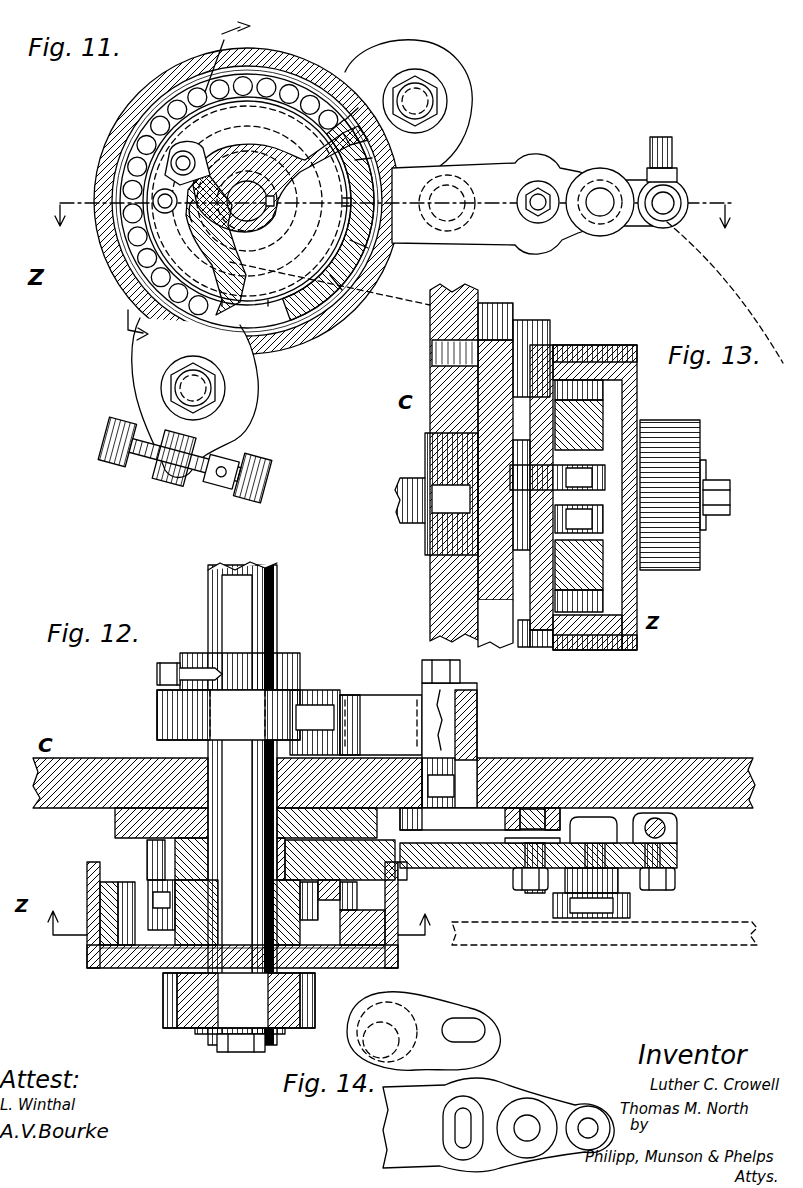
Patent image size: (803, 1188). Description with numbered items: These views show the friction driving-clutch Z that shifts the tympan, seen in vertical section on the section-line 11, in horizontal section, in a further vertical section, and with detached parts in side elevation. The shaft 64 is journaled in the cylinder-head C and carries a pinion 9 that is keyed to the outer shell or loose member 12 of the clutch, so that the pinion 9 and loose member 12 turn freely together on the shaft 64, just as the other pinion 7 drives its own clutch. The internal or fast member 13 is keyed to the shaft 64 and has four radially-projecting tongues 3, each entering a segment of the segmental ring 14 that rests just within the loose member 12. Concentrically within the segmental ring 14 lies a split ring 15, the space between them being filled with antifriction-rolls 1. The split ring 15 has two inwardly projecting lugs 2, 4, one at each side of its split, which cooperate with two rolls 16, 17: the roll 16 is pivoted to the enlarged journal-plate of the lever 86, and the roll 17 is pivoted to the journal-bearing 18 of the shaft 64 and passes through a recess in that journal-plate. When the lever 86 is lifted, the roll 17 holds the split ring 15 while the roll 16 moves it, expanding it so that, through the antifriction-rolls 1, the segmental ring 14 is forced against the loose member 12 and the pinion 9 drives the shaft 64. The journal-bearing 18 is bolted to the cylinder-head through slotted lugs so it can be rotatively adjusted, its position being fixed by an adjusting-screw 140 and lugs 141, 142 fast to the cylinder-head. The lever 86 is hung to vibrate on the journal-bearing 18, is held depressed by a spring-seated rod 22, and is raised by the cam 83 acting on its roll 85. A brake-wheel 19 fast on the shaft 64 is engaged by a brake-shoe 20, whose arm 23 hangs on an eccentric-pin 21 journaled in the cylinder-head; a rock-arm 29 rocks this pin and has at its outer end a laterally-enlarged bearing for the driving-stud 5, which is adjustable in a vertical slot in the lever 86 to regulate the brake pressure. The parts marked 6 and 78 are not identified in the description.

In FIG. 11, the antifriction-rolls 1 is at (272, 80).
In FIG. 13, the antifriction-rolls 1 is at (579, 496).
In FIG. 12, the antifriction-rolls 1 is at (239, 912).
In FIG. 11, the lug 2 is at (165, 213).
In FIG. 11, the radially-projecting tongues 3 is at (244, 308).
In FIG. 12, the radially-projecting tongues 3 is at (100, 955).
In FIG. 11, the lug 4 is at (186, 151).
In FIG. 12, the driving-stud 5 is at (532, 851).
In FIG. 11, the pawl nose 6 is at (186, 220).
In FIG. 11, the pinion 7 is at (195, 160).
In FIG. 13, the pinion 9 is at (675, 570).
In FIG. 12, the pinion 9 is at (163, 1000).
In FIG. 12, the section-line 11 is at (233, 938).
In FIG. 11, the outer shell or loose member 12 is at (94, 203).
In FIG. 13, the outer shell or loose member 12 is at (614, 352).
In FIG. 12, the outer shell or loose member 12 is at (254, 915).
In FIG. 11, the internal or fast member 13 is at (229, 181).
In FIG. 13, the internal or fast member 13 is at (625, 425).
In FIG. 12, the internal or fast member 13 is at (160, 948).
In FIG. 11, the segmental ring 14 is at (110, 148).
In FIG. 13, the segmental ring 14 is at (545, 355).
In FIG. 12, the segmental ring 14 is at (100, 900).
In FIG. 11, the split ring 15 is at (216, 242).
In FIG. 12, the split ring 15 is at (150, 862).
In FIG. 13, the roll 16 is at (579, 519).
In FIG. 12, the roll 16 is at (161, 905).
In FIG. 13, the roll 17 is at (557, 477).
In FIG. 11, the journal-bearing 18 is at (436, 70).
In FIG. 13, the journal-bearing 18 is at (497, 303).
In FIG. 12, the journal-bearing 18 is at (115, 824).
In FIG. 11, the brake-wheel 19 is at (322, 225).
In FIG. 12, the brake-wheel 19 is at (228, 715).
In FIG. 11, the brake-shoe 20 is at (300, 245).
In FIG. 12, the brake-shoe 20 is at (315, 722).
In FIG. 11, the eccentric-pin 21 is at (447, 203).
In FIG. 12, the eccentric-pin 21 is at (449, 734).
In FIG. 14, the eccentric-pin 21 is at (387, 1032).
In FIG. 11, the spring-seated rod 22 is at (672, 146).
In FIG. 12, the spring-seated rod 22 is at (668, 828).
In FIG. 12, the arm 23 is at (381, 725).
In FIG. 12, the rock-arm 29 is at (480, 819).
In FIG. 14, the rock-arm 29 is at (480, 1010).
In FIG. 11, the shaft 64 is at (256, 222).
In FIG. 13, the shaft 64 is at (397, 498).
In FIG. 12, the shaft 64 is at (242, 803).
In FIG. 13, the hub 78 is at (451, 494).
In FIG. 11, the cam 83 is at (748, 296).
In FIG. 12, the cam 83 is at (618, 934).
In FIG. 11, the roll 85 is at (598, 178).
In FIG. 12, the roll 85 is at (630, 902).
In FIG. 11, the lever 86 is at (538, 180).
In FIG. 13, the lever 86 is at (540, 648).
In FIG. 12, the lever 86 is at (460, 868).
In FIG. 14, the lever 86 is at (495, 1092).
In FIG. 11, the adjusting-screw 140 is at (218, 478).
In FIG. 11, the lug 141 is at (109, 457).
In FIG. 11, the lug 142 is at (263, 497).